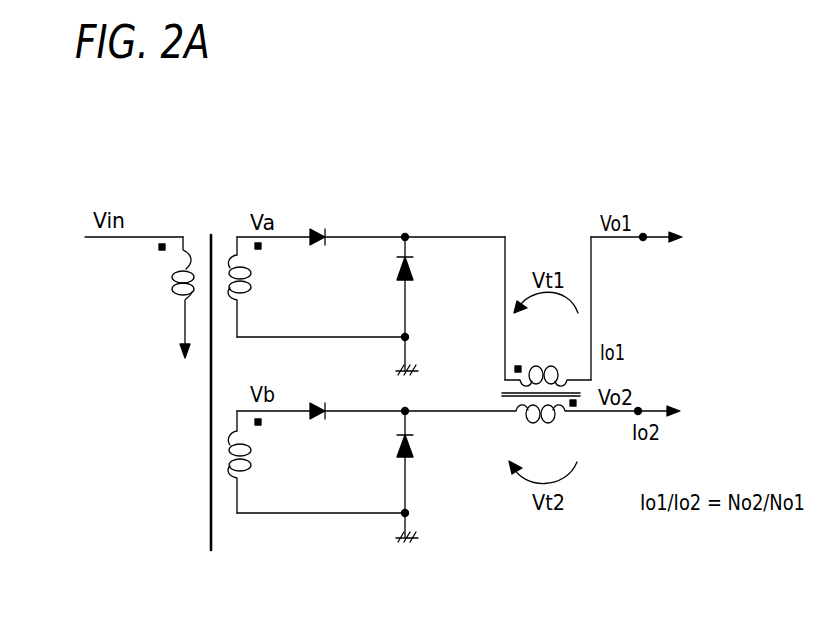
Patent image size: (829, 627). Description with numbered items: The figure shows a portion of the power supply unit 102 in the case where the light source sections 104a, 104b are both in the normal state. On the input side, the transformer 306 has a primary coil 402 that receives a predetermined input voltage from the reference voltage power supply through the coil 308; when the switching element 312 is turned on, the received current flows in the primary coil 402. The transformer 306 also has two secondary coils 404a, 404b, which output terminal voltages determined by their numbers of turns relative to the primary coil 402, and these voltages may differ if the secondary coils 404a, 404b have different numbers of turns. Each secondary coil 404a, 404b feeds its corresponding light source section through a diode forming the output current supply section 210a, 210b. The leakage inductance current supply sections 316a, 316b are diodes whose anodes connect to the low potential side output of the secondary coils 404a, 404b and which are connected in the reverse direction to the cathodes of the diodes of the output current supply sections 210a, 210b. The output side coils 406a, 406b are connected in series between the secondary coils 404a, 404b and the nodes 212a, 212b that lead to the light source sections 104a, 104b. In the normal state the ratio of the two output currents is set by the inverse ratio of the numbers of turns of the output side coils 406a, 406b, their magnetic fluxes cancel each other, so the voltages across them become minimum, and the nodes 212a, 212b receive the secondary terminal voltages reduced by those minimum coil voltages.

The power supply unit 102 is at (575, 174).
The transformer 306 is at (218, 196).
The coil 308 is at (108, 238).
The switching element 312 is at (178, 366).
The primary coil 402 is at (182, 233).
The secondary coil 404a is at (250, 286).
The secondary coil 404b is at (251, 464).
The output current supply section 210a is at (315, 228).
The output current supply section 210b is at (315, 402).
The leakage inductance current supply section 316a is at (408, 280).
The leakage inductance current supply section 316b is at (410, 456).
The output side coil 406a is at (535, 366).
The output side coil 406b is at (545, 424).
The node 212a is at (646, 232).
The node 212b is at (642, 407).
The light source section 104a is at (701, 238).
The light source section 104b is at (700, 412).